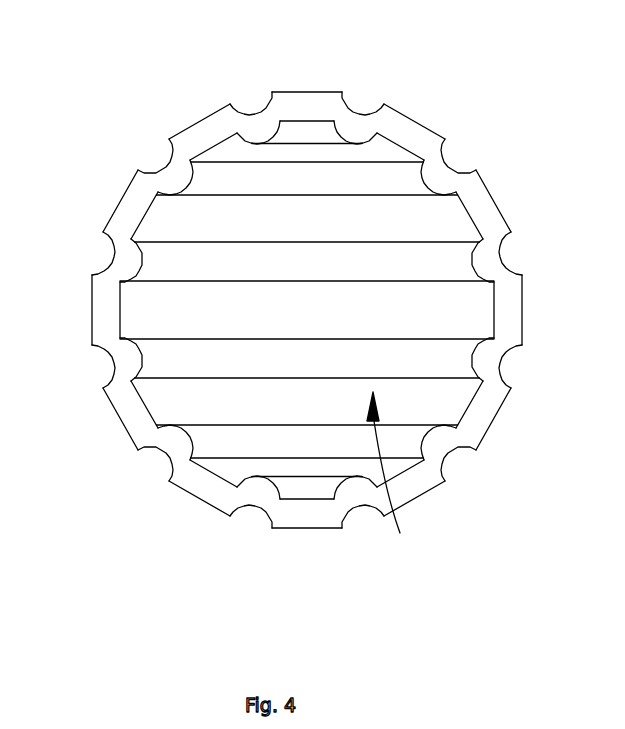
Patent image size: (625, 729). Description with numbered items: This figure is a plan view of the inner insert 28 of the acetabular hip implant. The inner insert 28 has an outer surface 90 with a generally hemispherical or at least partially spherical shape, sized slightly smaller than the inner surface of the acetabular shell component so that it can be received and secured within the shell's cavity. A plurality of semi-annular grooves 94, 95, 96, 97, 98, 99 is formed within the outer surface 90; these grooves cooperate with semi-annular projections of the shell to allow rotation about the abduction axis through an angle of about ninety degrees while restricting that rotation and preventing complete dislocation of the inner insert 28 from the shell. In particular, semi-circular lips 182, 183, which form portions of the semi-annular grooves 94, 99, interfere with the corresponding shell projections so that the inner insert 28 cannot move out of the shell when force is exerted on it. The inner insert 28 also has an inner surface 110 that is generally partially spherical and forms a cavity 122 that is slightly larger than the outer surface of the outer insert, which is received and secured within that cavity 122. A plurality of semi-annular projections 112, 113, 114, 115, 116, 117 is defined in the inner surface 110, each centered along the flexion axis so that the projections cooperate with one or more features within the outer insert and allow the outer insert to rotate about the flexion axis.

The inner insert 28 is at (404, 112).
The outer surface 90 is at (306, 91).
The semi-annular groove 94 is at (112, 253).
The semi-annular groove 95 is at (165, 152).
The semi-annular groove 96 is at (252, 116).
The semi-annular groove 97 is at (345, 98).
The semi-annular groove 98 is at (444, 143).
The semi-annular groove 99 is at (498, 252).
The inner surface 110 is at (423, 397).
The semi-annular projection 112 is at (303, 488).
The semi-annular projection 113 is at (233, 440).
The semi-annular projection 114 is at (180, 363).
The semi-annular projection 115 is at (173, 262).
The semi-annular projection 116 is at (247, 177).
The semi-annular projection 117 is at (306, 133).
The cavity 122 is at (400, 476).
The semi-circular lip 182 is at (90, 317).
The semi-circular lip 183 is at (524, 312).